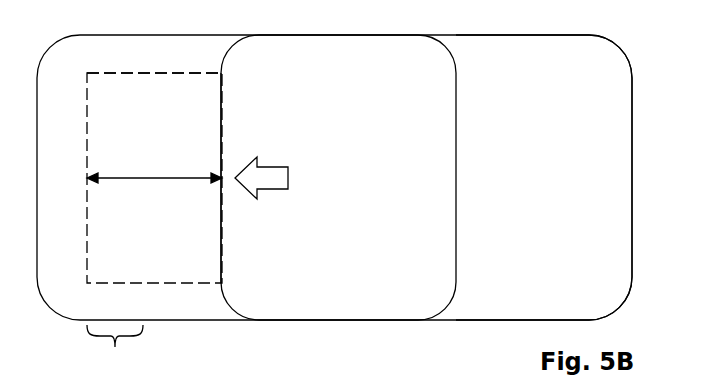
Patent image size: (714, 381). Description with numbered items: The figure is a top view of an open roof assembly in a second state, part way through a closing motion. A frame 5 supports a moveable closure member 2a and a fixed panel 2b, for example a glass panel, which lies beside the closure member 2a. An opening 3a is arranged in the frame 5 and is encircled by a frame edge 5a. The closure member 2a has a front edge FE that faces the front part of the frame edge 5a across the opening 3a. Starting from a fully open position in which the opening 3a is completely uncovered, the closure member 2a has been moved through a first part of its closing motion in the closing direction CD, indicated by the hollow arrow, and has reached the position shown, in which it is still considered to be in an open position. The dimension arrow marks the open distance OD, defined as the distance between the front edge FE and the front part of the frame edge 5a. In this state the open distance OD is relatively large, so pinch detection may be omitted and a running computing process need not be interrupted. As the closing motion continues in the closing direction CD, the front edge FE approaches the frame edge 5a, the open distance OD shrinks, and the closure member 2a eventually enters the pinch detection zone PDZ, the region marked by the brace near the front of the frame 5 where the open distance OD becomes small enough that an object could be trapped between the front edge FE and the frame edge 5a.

The frame 5 is at (53, 180).
The frame edge 5a is at (142, 74).
The opening 3a is at (129, 263).
The moveable closure member 2a is at (351, 173).
The fixed panel 2b is at (562, 175).
The front edge FE is at (222, 113).
The open distance OD is at (157, 180).
The closing direction CD is at (268, 180).
The pinch detection zone PDZ is at (115, 348).